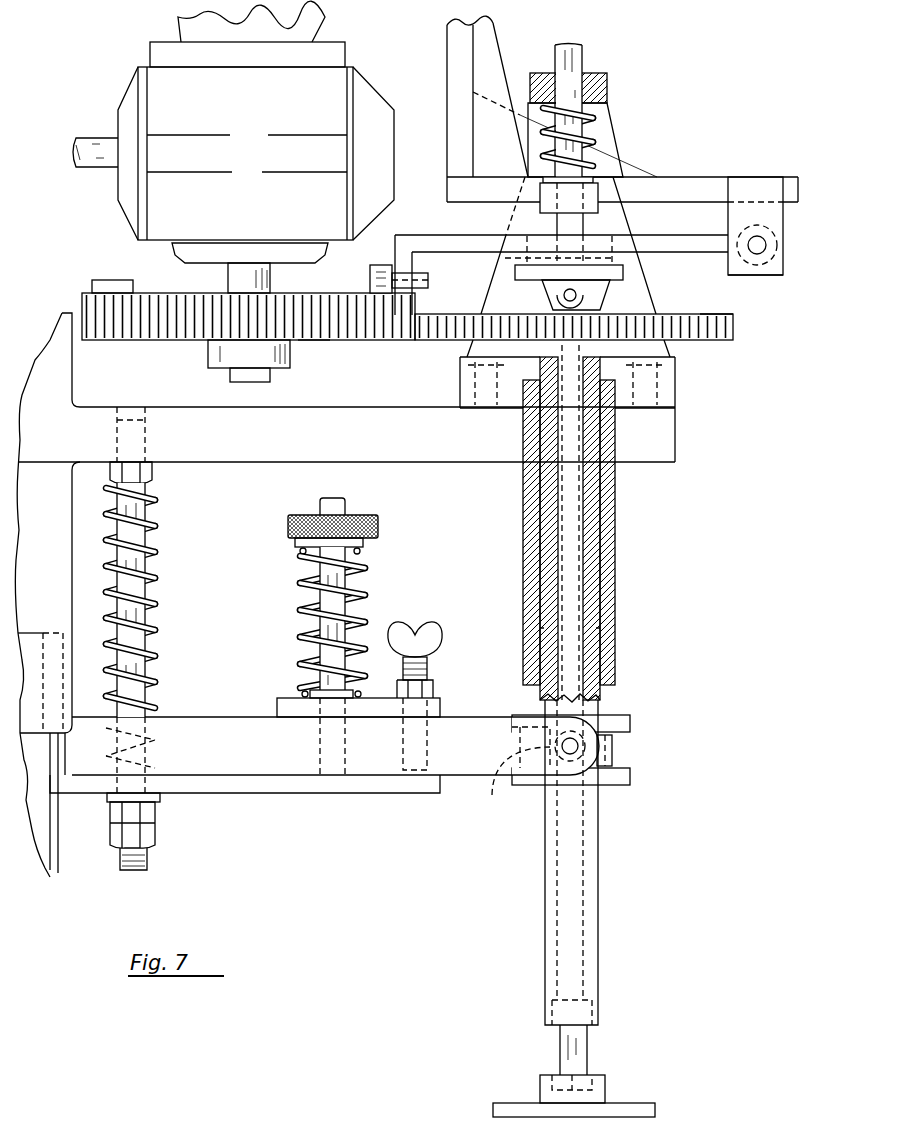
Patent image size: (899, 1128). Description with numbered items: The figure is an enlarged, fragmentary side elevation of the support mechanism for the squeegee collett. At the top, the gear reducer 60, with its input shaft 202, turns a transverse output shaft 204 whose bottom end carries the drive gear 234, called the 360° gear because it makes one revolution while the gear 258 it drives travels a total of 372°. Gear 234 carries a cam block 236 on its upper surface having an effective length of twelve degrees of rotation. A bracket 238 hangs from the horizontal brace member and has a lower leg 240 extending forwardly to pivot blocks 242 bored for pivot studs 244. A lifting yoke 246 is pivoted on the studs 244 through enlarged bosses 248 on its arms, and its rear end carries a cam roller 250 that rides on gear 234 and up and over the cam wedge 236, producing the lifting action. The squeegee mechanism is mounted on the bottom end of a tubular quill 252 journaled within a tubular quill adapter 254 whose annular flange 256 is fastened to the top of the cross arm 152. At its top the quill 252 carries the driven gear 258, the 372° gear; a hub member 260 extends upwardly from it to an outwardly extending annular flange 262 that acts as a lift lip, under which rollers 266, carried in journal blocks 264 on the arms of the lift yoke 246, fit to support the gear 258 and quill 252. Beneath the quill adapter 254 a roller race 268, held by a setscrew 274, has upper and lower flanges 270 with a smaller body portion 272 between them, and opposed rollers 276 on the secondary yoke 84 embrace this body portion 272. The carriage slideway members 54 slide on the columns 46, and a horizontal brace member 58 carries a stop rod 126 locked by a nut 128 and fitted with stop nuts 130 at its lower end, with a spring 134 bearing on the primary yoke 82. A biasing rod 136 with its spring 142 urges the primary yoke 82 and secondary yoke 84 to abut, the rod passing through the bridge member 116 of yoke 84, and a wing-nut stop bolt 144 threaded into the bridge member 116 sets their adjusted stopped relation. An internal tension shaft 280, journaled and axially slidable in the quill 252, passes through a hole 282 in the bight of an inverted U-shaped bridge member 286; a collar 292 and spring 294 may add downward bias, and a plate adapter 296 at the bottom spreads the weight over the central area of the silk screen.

The columns 46 is at (58, 876).
The tubular slideway members 54 is at (73, 385).
The horizontal brace member 58 is at (348, 415).
The gear reducer 60 is at (268, 165).
The primary yoke member 82 is at (256, 791).
The secondary yoke 84 is at (380, 757).
The transverse bridge member 116 is at (441, 708).
The stop rod 126 is at (164, 659).
The nut 128 is at (153, 476).
The stop nuts 130 is at (152, 820).
The spring 134 is at (153, 518).
The biasing rod 136 is at (315, 623).
The spring 142 is at (311, 587).
The stop bolt 144 is at (430, 665).
The cross arm 152 is at (676, 393).
The input shaft 202 is at (98, 138).
The output shaft 204 is at (232, 283).
The gear 234 is at (165, 330).
The cam block 236 is at (93, 280).
The bracket 238 is at (495, 43).
The lower leg 240 is at (675, 180).
The pivot blocks 242 is at (775, 276).
The pivot studs 244 is at (748, 238).
The lifting yoke 246 is at (417, 208).
The enlarged bosses 248 is at (767, 230).
The cam roller 250 is at (370, 273).
The tubular quill 252 is at (599, 859).
The tubular quill adapter 254 is at (617, 528).
The annular flange 256 is at (677, 359).
The driven gear 258 is at (715, 333).
The hub member 260 is at (612, 294).
The annular flange 262 is at (515, 272).
The journal blocks 264 is at (606, 257).
The rollers 266 is at (555, 297).
The roller race 268 is at (612, 738).
The upper and lower flanges 270 is at (632, 716).
The body portion 272 is at (614, 745).
The setscrew 274 is at (614, 749).
The opposed rollers 276 is at (521, 782).
The internal tension shaft 280 is at (567, 58).
The hole 282 is at (578, 88).
The inverted U-shaped bridge member 286 is at (617, 128).
The collar 292 is at (596, 192).
The spring 294 is at (592, 155).
The plate adapter 296 is at (606, 1083).
The gear teeth 360 is at (312, 343).
The gear teeth 372 is at (736, 313).